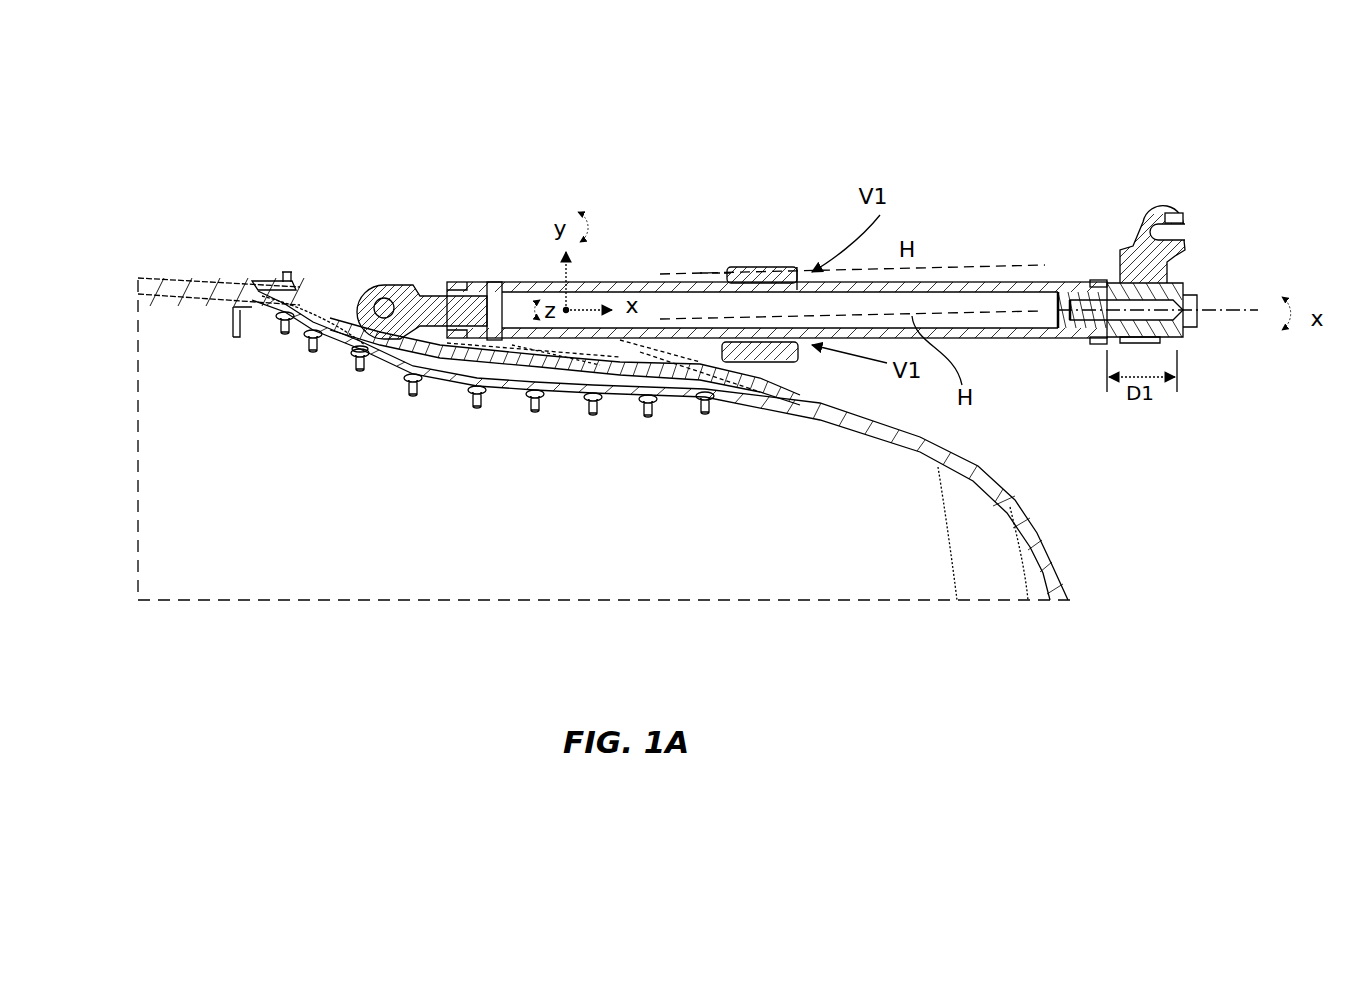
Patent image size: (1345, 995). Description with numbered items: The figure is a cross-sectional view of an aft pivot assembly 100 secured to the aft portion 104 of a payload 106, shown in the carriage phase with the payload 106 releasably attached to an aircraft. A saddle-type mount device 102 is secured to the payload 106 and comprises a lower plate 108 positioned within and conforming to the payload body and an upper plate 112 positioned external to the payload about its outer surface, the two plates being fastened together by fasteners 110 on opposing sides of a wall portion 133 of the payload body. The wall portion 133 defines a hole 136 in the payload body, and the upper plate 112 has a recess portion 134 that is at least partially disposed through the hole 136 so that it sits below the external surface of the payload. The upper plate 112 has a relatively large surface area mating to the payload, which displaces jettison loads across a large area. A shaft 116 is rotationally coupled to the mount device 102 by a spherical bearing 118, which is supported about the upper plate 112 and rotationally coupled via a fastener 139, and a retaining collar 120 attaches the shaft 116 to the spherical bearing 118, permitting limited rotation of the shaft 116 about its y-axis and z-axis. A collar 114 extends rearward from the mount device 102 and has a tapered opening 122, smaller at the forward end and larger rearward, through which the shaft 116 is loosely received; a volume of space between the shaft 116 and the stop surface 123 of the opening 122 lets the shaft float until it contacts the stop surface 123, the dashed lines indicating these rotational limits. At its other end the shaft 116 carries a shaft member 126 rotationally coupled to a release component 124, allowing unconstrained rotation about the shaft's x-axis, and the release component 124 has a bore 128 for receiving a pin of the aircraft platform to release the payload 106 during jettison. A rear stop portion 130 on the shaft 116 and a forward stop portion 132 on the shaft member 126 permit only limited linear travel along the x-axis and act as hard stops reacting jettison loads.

The aft pivot assembly 100 is at (552, 103).
The mount device 102 is at (403, 178).
The aft portion 104 is at (983, 632).
The payload 106 is at (1057, 568).
The lower plate 108 is at (440, 400).
The fasteners 110 is at (592, 415).
The upper plate 112 is at (513, 360).
The collar 114 is at (760, 262).
The shaft 116 is at (1008, 287).
The spherical bearing 118 is at (383, 280).
The retaining collar 120 is at (463, 287).
The opening 122 is at (712, 270).
The stop surface 123 is at (785, 362).
The release component 124 is at (1147, 212).
The shaft member 126 is at (1200, 303).
The bore 128 is at (1188, 222).
The rear stop portion 130 is at (1180, 345).
The forward stop portion 132 is at (1090, 347).
The wall portion 133 is at (252, 306).
The recess portion 134 is at (336, 302).
The hole 136 is at (565, 378).
The fastener 139 is at (358, 352).